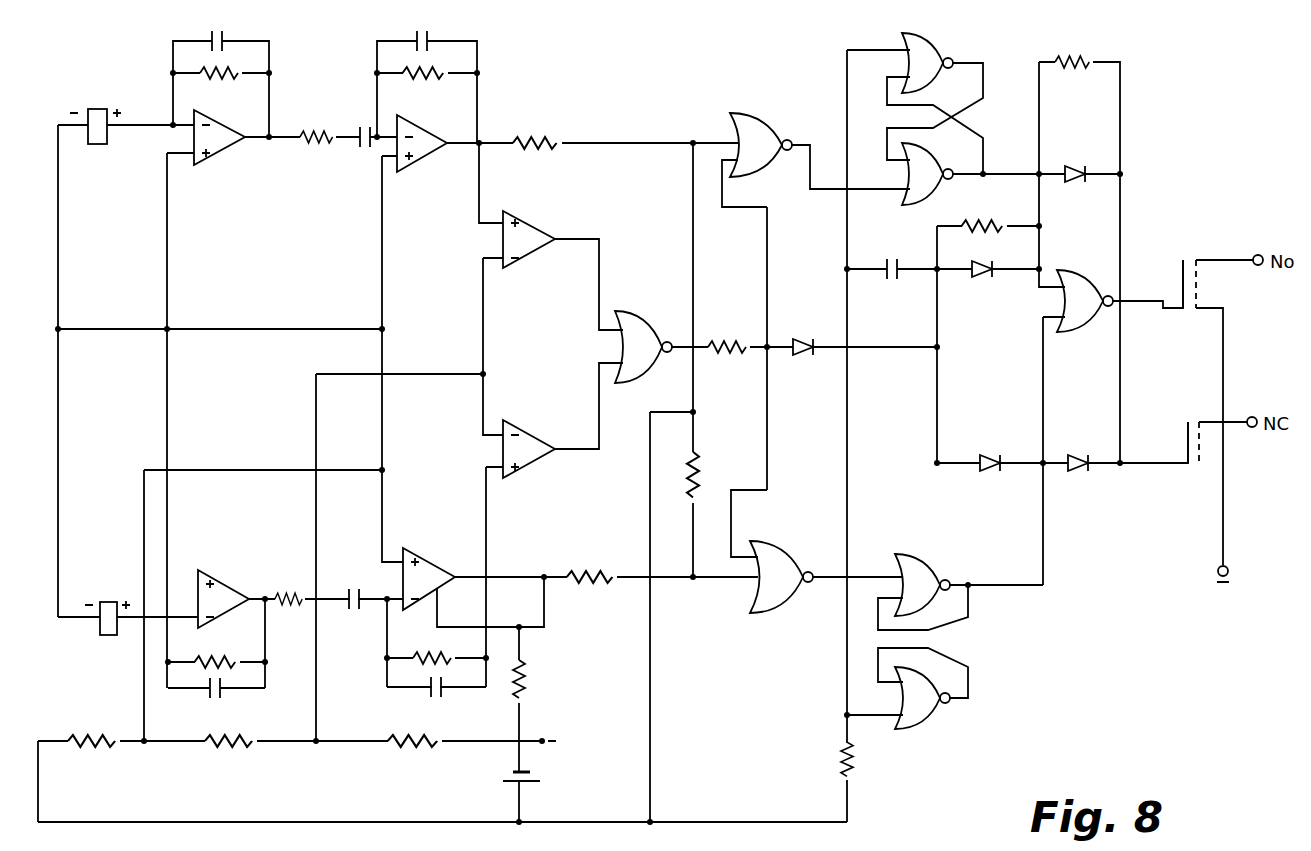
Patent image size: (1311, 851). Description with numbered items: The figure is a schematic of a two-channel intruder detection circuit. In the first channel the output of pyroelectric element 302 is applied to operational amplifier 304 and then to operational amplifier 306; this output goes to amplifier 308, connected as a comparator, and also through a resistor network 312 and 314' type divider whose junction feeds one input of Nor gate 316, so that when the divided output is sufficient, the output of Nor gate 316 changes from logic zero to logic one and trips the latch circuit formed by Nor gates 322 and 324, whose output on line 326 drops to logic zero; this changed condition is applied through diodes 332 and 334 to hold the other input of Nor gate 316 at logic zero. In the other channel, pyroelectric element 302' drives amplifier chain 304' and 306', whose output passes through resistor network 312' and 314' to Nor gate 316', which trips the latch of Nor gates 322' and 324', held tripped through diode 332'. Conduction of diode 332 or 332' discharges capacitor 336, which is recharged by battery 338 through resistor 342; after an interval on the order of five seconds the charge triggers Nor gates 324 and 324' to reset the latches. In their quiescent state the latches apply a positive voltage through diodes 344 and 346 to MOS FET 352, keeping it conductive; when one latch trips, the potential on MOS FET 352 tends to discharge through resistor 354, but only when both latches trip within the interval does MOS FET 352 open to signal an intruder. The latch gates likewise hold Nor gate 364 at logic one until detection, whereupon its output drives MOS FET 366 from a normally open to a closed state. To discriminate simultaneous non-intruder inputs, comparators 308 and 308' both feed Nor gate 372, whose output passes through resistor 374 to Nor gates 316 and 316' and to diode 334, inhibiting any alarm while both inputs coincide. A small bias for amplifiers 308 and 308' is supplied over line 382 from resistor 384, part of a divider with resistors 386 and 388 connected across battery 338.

The pyroelectric element 302 is at (95, 103).
The pyroelectric element 302' is at (105, 600).
The operational amplifier 304 is at (219, 154).
The operational amplifier 304' is at (236, 584).
The operational amplifier 306 is at (422, 157).
The operational amplifier 306' is at (433, 564).
The amplifier 308 is at (544, 234).
The comparator 308' is at (540, 435).
The resistor 312 is at (540, 119).
The resistor 312' is at (593, 551).
The resistor 314' is at (720, 464).
The Nor gate 316 is at (761, 129).
The Nor gate 316' is at (781, 595).
The Nor gate 322 is at (942, 178).
The Nor gate 322' is at (924, 565).
The Nor gate 324 is at (942, 54).
The Nor gate 324' is at (939, 710).
The line 326 is at (1018, 172).
The diode 332 is at (992, 288).
The diode 332' is at (982, 448).
The diode 334 is at (804, 357).
The capacitor 336 is at (896, 278).
The battery 338 is at (540, 774).
The resistor 342 is at (853, 776).
The diode 344 is at (1070, 180).
The diode 346 is at (1080, 472).
The MOS FET 352 is at (1187, 466).
The resistor 354 is at (1088, 58).
The Nor gate 364 is at (1078, 276).
The MOS FET 366 is at (1196, 254).
The Nor gate 372 is at (642, 320).
The resistor 374 is at (731, 341).
The line 382 is at (436, 372).
The resistor 384 is at (418, 746).
The resistor 386 is at (244, 748).
The resistor 388 is at (103, 748).